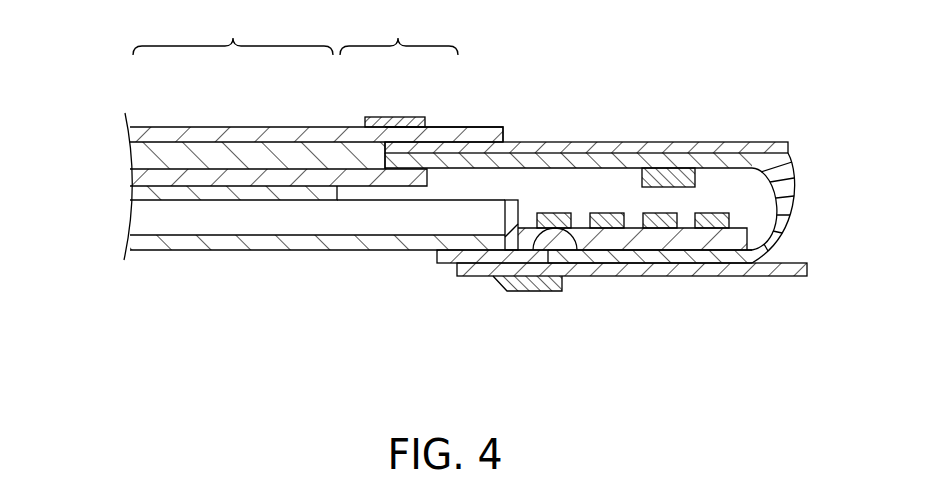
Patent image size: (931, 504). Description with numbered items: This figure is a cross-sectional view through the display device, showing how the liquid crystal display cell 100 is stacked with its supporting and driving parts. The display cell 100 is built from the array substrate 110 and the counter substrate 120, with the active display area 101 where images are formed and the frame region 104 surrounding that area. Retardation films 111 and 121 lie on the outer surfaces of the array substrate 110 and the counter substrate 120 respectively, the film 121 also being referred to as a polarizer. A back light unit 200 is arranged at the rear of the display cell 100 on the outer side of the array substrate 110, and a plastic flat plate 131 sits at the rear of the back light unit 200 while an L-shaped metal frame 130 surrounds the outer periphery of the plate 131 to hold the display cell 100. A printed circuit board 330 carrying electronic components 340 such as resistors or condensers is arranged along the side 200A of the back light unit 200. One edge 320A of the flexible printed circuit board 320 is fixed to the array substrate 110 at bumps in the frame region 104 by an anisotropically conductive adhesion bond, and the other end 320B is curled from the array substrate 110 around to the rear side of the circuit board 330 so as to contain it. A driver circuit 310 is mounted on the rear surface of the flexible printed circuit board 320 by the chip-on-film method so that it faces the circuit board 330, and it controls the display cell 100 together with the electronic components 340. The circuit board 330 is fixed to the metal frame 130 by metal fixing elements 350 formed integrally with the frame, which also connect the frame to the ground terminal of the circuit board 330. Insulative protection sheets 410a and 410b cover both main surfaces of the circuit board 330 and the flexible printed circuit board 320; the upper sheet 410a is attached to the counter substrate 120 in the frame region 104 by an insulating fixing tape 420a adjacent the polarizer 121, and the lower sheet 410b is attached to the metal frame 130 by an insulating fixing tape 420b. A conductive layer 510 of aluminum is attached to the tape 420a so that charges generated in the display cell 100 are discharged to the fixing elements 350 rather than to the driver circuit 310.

The liquid crystal display cell 100 is at (112, 152).
The active display area 101 is at (233, 30).
The frame region 104 is at (399, 30).
The array substrate 110 is at (165, 173).
The retardation film 111 is at (242, 200).
The counter substrate 120 is at (227, 145).
The retardation film 121 is at (292, 134).
The metal frame 130 is at (448, 262).
The plastic flat plate 131 is at (309, 250).
The back light unit 200 is at (138, 220).
The side of back light unit 200A is at (510, 213).
The driver circuit 310 is at (682, 176).
The flexible printed circuit board 320 is at (790, 188).
The one edge of flexible printed circuit board 320A is at (452, 143).
The other end of flexible printed circuit board 320B is at (718, 262).
The printed circuit board 330 is at (788, 234).
The electronic components 340 is at (713, 213).
The metal fixing elements 350 is at (577, 252).
The protection sheet 410a is at (627, 142).
The protection sheet 410b is at (627, 276).
The insulating fixing tape 420a is at (478, 126).
The insulating fixing tape 420b is at (525, 291).
The conductive layer 510 is at (380, 117).